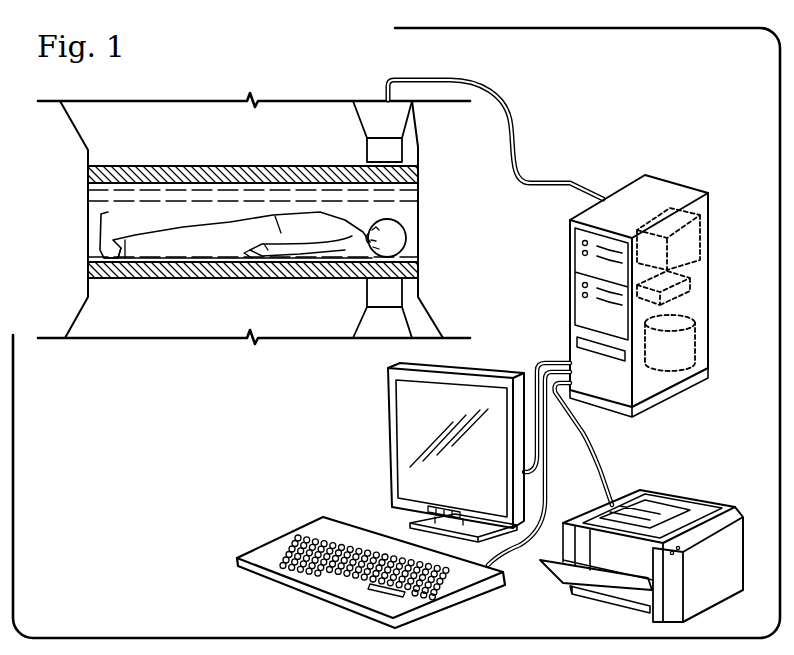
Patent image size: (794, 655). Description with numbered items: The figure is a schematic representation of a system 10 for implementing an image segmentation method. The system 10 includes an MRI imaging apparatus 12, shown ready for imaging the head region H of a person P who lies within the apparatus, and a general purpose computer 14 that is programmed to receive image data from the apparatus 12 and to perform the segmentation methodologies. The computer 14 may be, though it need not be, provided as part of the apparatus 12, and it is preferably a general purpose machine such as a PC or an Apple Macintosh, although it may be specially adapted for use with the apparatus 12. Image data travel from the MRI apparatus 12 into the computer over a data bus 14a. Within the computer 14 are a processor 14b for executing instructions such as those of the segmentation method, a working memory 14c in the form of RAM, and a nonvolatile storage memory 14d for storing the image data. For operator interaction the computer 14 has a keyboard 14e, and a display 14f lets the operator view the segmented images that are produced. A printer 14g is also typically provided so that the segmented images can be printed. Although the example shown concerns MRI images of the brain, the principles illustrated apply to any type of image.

The system 10 is at (685, 66).
The MRI imaging apparatus 12 is at (390, 152).
The general purpose computer 14 is at (710, 150).
The data bus 14a is at (550, 178).
The processor 14b is at (701, 232).
The working memory 14c is at (694, 292).
The nonvolatile storage memory 14d is at (700, 346).
The keyboard 14e is at (287, 536).
The display 14f is at (387, 436).
The printer 14g is at (668, 494).
The person P is at (183, 240).
The head region H is at (421, 236).